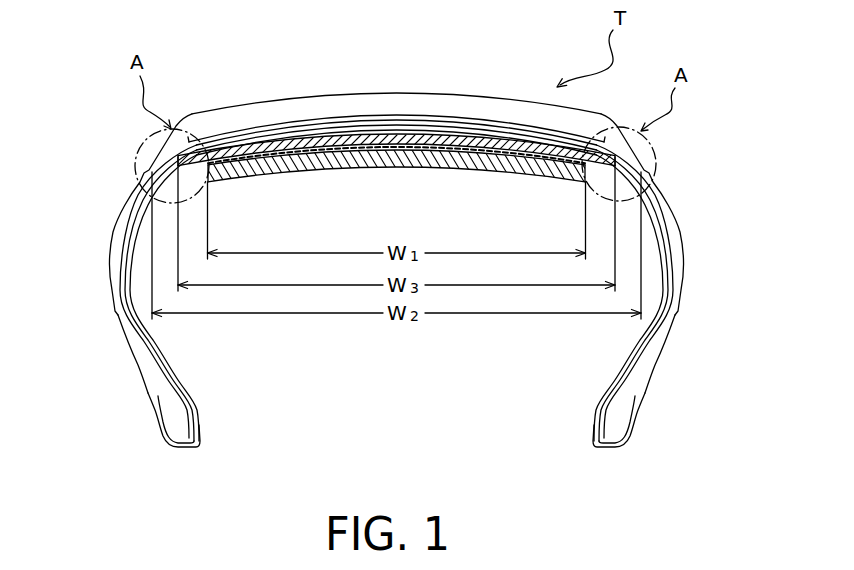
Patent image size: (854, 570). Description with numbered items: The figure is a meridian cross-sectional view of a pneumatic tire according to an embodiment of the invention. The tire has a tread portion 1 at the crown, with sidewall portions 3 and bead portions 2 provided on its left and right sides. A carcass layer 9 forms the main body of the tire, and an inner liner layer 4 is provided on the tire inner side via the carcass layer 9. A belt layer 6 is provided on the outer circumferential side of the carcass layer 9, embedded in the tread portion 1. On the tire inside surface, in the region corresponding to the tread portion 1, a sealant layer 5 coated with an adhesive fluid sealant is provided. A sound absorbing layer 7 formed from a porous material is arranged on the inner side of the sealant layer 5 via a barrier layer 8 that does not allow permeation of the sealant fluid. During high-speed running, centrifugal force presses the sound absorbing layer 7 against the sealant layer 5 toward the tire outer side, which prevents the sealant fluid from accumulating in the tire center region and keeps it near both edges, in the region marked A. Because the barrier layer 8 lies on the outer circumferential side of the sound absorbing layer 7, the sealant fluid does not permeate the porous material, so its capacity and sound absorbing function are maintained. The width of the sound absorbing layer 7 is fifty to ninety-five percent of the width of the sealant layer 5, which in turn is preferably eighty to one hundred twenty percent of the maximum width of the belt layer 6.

The tread portion 1 is at (491, 92).
The bead portion 2 is at (156, 418).
The sidewall portion 3 is at (110, 233).
The inner liner layer 4 is at (393, 131).
The sealant layer 5 is at (305, 140).
The belt layer 6 is at (253, 128).
The sound absorbing layer 7 is at (355, 160).
The barrier layer 8 is at (313, 150).
The carcass layer 9 is at (150, 368).